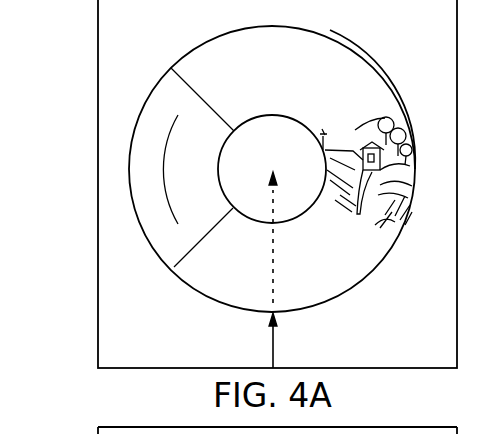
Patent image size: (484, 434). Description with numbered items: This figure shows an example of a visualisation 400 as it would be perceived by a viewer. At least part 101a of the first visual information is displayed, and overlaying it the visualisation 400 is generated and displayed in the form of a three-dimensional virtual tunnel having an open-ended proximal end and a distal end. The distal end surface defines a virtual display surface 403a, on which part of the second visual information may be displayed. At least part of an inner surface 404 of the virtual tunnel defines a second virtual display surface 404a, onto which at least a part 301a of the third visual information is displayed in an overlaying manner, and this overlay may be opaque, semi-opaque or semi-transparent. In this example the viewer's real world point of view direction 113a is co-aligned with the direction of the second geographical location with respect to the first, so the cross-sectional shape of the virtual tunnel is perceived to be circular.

The part of first visual information 101a is at (110, 283).
The visualisation 400 is at (172, 67).
The inner surface 404 is at (368, 255).
The virtual display surface 403a is at (250, 140).
The part of third visual information 301a is at (348, 140).
The second virtual display surface 404a is at (358, 135).
The real world point of view direction 113a is at (307, 340).